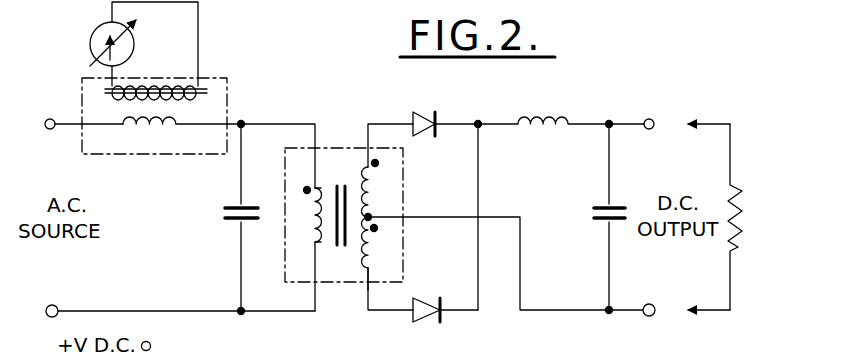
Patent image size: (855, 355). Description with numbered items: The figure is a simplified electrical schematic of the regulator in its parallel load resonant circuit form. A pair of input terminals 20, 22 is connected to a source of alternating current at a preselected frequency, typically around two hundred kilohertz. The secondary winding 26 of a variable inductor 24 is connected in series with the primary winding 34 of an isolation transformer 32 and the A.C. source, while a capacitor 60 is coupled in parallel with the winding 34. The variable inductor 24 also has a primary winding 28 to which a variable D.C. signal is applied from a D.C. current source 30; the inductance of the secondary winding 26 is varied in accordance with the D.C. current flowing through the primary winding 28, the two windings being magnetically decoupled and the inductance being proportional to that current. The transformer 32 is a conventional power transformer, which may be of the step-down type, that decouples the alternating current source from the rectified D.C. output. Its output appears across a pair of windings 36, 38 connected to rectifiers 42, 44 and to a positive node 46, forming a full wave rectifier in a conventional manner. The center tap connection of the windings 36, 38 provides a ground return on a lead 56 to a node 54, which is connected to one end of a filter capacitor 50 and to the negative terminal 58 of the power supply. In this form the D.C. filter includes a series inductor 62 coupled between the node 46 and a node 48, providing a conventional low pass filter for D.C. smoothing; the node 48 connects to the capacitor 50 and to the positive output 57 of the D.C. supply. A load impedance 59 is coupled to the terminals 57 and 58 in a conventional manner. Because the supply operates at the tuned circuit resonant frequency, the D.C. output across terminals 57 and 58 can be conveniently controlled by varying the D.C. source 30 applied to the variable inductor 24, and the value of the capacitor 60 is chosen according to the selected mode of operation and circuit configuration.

The input terminal 20 is at (50, 119).
The input terminal 22 is at (53, 305).
The variable inductor 24 is at (228, 98).
The secondary winding 26 is at (143, 128).
The primary winding 28 is at (160, 85).
The D.C. current source 30 is at (88, 52).
The isolation transformer 32 is at (285, 178).
The primary winding 34 is at (318, 222).
The secondary winding 36 is at (360, 197).
The secondary winding 38 is at (355, 254).
The rectifier 42 is at (415, 110).
The rectifier 44 is at (428, 298).
The positive node 46 is at (478, 119).
The node 48 is at (610, 120).
The filter capacitor 50 is at (595, 209).
The node 54 is at (606, 305).
The lead 56 is at (500, 213).
The positive output terminal 57 is at (654, 128).
The negative terminal 58 is at (658, 302).
The load impedance 59 is at (728, 187).
The capacitor 60 is at (223, 206).
The series inductor 62 is at (535, 110).